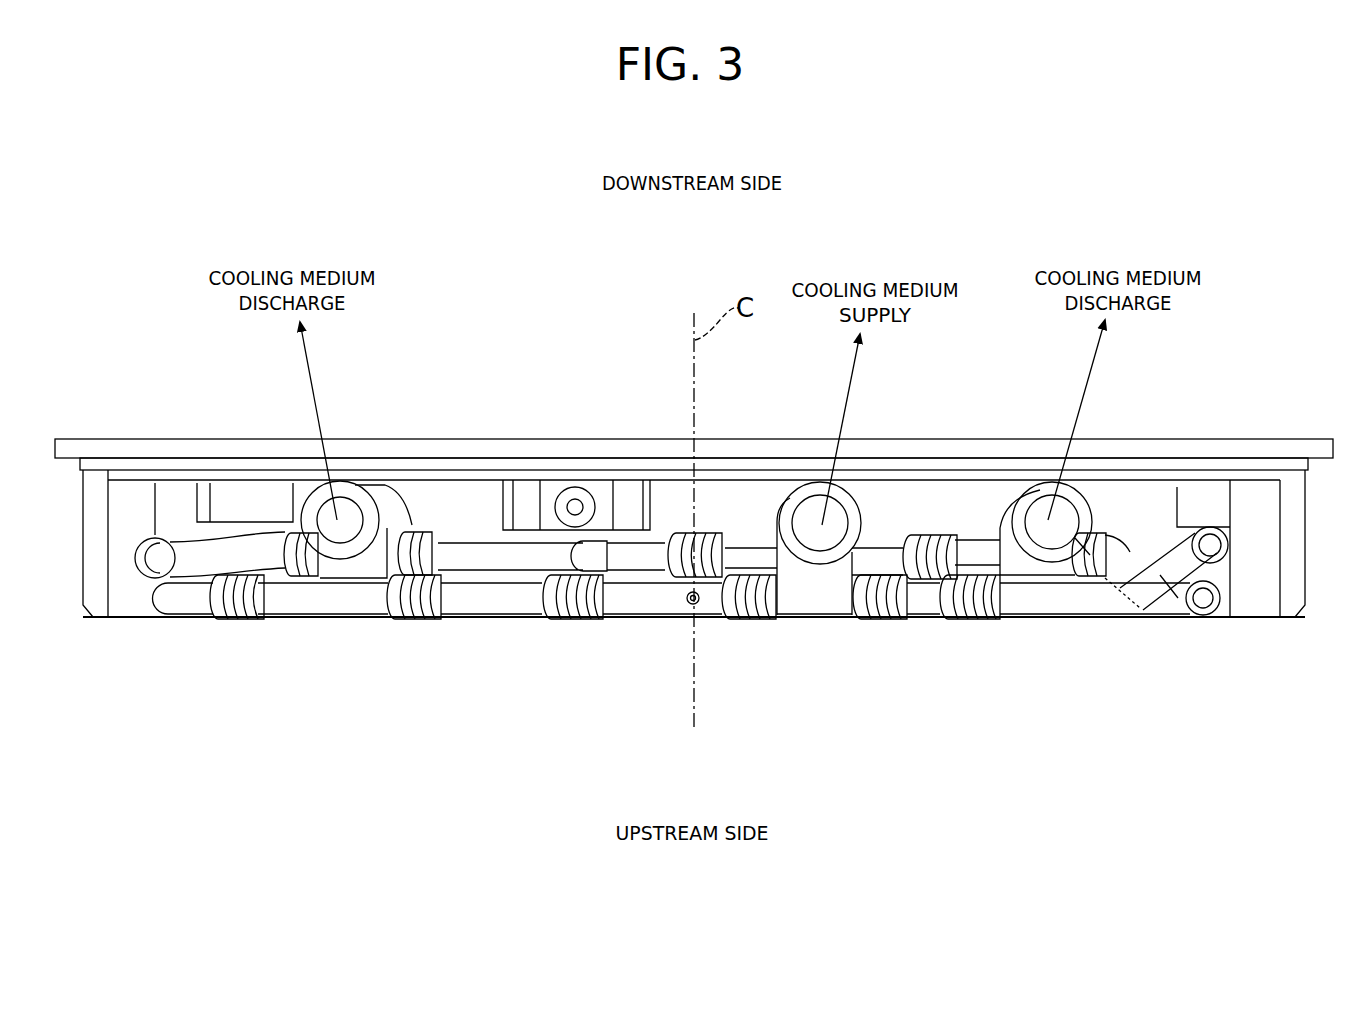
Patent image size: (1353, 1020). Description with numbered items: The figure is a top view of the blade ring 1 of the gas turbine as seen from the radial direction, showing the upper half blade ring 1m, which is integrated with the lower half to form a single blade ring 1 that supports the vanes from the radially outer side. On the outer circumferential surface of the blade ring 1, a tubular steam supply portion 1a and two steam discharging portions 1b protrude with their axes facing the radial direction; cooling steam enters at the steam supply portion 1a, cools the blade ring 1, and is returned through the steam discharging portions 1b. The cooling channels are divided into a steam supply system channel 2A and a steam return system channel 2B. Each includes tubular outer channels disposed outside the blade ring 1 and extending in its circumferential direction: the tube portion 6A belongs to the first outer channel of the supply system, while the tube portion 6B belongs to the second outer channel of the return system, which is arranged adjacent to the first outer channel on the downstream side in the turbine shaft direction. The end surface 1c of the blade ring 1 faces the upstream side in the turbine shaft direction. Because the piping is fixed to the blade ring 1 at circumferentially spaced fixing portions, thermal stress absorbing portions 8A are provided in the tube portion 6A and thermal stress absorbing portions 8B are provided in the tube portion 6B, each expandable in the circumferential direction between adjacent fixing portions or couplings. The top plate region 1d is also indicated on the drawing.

The blade ring 1 is at (694, 547).
The steam supply portion 1a is at (780, 500).
The steam discharging portion 1b is at (303, 495).
The end surface 1c is at (183, 620).
The top plate 1d is at (110, 438).
The upper half blade ring 1m is at (1290, 622).
The steam supply system channel 2A is at (686, 639).
The steam return system channel 2B is at (681, 534).
The tube portion of first outer channel 6A is at (333, 612).
The tube portion of second outer channel 6B is at (223, 547).
The thermal stress absorbing portion 8A is at (227, 618).
The thermal stress absorbing portion 8B is at (408, 540).